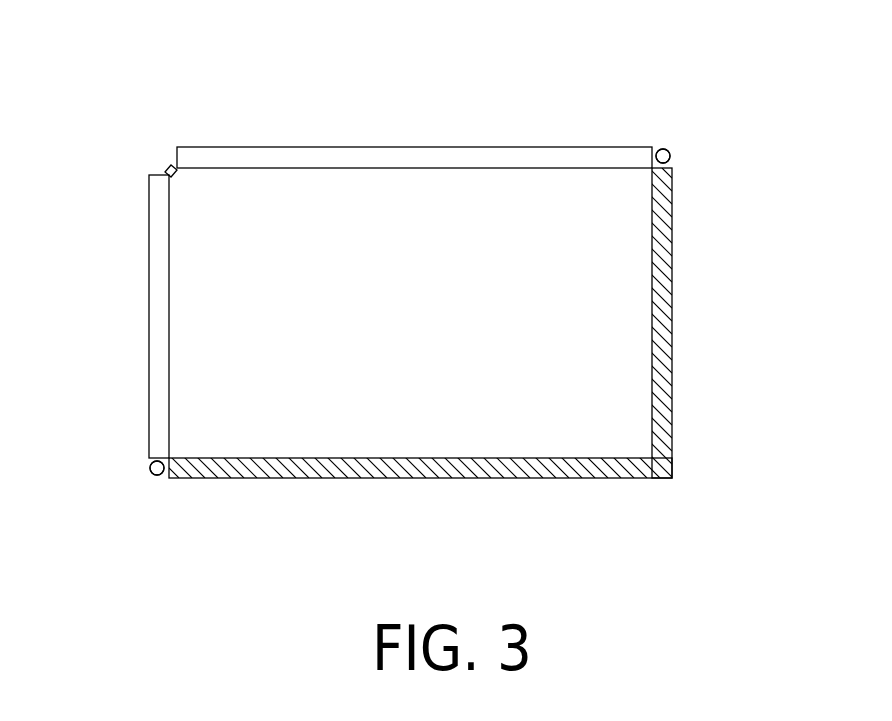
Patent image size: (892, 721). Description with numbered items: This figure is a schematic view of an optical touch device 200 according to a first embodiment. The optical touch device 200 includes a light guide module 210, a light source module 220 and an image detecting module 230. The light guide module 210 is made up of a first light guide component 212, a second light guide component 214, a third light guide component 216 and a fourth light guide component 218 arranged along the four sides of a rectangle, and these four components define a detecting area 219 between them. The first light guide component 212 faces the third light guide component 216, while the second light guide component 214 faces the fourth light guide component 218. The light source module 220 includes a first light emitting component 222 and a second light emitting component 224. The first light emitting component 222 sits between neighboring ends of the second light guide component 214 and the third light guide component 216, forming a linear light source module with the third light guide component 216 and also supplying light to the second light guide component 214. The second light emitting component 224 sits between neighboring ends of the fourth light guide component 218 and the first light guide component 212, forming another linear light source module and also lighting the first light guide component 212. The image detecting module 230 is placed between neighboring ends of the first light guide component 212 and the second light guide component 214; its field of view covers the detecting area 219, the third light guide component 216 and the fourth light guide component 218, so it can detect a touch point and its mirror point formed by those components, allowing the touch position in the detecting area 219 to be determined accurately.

The optical touch device 200 is at (727, 592).
The light guide module 210 is at (560, 62).
The first light guide component 212 is at (160, 282).
The second light guide component 214 is at (376, 158).
The third light guide component 216 is at (650, 223).
The fourth light guide component 218 is at (456, 468).
The detecting area 219 is at (205, 342).
The light source module 220 is at (760, 433).
The first light emitting component 222 is at (671, 161).
The second light emitting component 224 is at (160, 475).
The image detecting module 230 is at (166, 170).